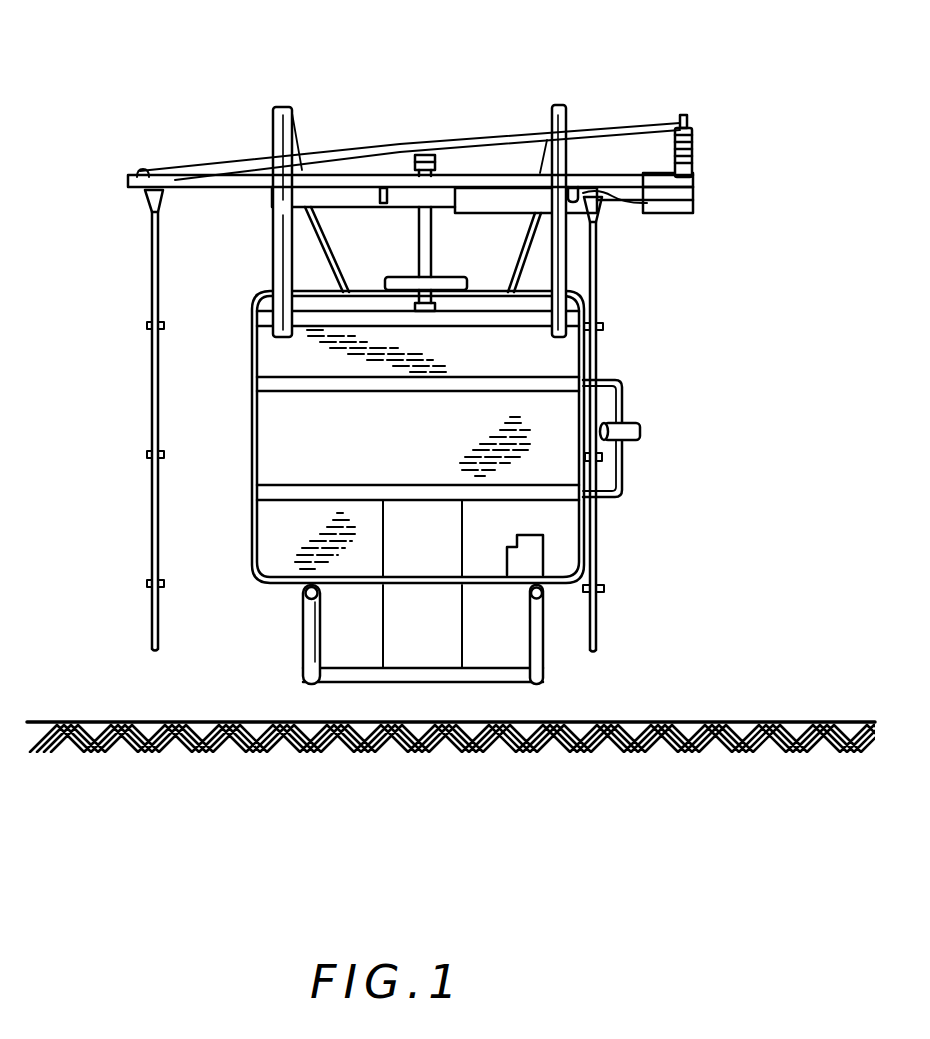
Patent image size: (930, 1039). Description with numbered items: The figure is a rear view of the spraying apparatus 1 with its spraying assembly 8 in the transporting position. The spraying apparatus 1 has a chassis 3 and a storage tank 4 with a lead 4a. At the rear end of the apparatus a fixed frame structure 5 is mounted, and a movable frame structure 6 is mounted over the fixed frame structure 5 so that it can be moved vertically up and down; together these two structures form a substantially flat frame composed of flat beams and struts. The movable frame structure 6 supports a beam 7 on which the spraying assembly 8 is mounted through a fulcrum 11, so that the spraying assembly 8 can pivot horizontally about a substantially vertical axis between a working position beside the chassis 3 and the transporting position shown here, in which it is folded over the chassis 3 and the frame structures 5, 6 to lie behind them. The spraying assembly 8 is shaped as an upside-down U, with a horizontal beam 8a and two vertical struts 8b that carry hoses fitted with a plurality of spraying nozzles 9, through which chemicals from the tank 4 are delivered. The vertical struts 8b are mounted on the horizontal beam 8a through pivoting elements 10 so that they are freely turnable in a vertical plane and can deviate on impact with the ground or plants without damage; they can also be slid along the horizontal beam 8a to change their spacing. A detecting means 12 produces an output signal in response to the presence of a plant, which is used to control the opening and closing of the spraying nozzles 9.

The spraying apparatus 1 is at (562, 94).
The chassis 3 is at (533, 657).
The storage tank 4 is at (306, 352).
The lead 4a is at (467, 282).
The fixed frame structure 5 is at (283, 433).
The movable frame structure 6 is at (362, 172).
The beam 7 is at (694, 202).
The spraying assembly 8 is at (108, 278).
The horizontal beam 8a is at (197, 172).
The vertical struts 8b is at (150, 297).
The spraying nozzles 9 is at (147, 583).
The pivoting elements 10 is at (147, 198).
The fulcrum 11 is at (692, 137).
The detecting means 12 is at (641, 431).